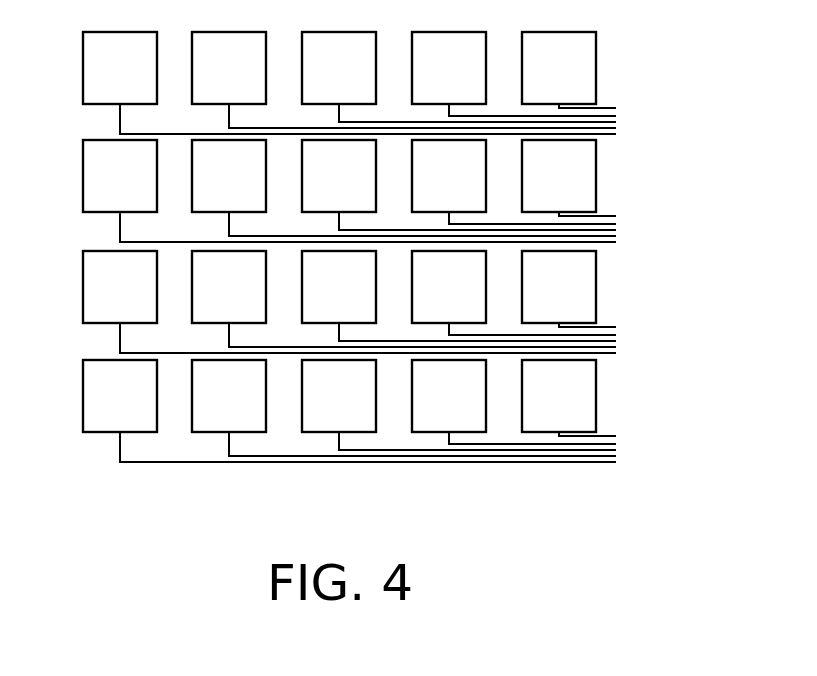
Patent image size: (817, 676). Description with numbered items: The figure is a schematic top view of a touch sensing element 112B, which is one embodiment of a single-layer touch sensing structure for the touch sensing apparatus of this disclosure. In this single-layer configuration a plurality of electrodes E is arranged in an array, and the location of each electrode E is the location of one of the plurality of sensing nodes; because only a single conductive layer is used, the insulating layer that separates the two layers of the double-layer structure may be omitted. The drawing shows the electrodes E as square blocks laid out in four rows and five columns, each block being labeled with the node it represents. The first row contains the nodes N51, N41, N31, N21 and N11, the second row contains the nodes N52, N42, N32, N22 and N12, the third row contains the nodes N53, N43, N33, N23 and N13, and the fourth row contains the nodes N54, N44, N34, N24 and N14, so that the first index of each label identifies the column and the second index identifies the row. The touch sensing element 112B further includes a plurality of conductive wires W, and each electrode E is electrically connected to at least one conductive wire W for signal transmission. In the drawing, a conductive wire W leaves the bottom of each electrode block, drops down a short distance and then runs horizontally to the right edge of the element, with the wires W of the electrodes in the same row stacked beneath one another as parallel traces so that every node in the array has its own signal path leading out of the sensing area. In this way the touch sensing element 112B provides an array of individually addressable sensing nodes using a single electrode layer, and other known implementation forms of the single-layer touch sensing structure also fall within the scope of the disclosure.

The touch sensing element 112B is at (441, 287).
The electrode E is at (596, 68).
The conductive wire W is at (578, 464).
The electrode node N11 is at (559, 68).
The electrode node N21 is at (449, 68).
The electrode node N31 is at (339, 68).
The electrode node N41 is at (229, 68).
The electrode node N51 is at (120, 68).
The electrode node N12 is at (559, 176).
The electrode node N22 is at (449, 176).
The electrode node N32 is at (339, 176).
The electrode node N42 is at (229, 176).
The electrode node N52 is at (120, 176).
The electrode node N13 is at (559, 287).
The electrode node N23 is at (449, 287).
The electrode node N33 is at (339, 287).
The electrode node N43 is at (229, 287).
The electrode node N53 is at (120, 287).
The electrode node N14 is at (559, 396).
The electrode node N24 is at (449, 396).
The electrode node N34 is at (339, 396).
The electrode node N44 is at (229, 396).
The electrode node N54 is at (120, 396).